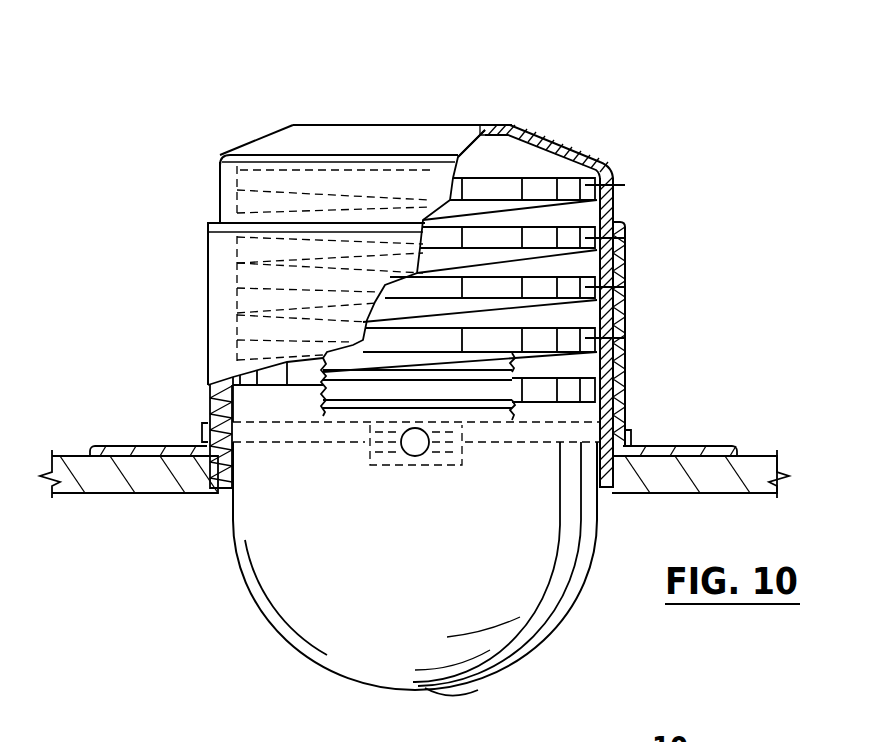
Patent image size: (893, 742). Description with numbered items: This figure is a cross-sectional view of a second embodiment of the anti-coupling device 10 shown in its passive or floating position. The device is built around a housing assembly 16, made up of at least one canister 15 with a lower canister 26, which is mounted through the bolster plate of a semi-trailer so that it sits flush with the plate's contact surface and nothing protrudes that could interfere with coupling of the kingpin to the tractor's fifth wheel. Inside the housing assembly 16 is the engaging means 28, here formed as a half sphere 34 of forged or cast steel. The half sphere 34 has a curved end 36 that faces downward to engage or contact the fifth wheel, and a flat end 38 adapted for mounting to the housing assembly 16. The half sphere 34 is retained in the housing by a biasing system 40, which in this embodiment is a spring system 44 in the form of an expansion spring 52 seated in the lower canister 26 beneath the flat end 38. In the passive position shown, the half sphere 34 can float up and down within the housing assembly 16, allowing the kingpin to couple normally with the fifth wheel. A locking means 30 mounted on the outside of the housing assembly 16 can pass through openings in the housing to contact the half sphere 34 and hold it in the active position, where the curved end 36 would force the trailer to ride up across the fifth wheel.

The anti-coupling device 10 is at (565, 91).
The canister 15 is at (240, 155).
The housing assembly 16 is at (615, 200).
The lower canister 26 is at (618, 330).
The engaging means 28 is at (283, 563).
The locking means 30 is at (632, 431).
The half sphere 34 is at (298, 614).
The curved end 36 is at (430, 688).
The flat end 38 is at (211, 401).
The biasing system 40 is at (615, 178).
The spring system 44 is at (618, 240).
The expansion spring 52 is at (620, 287).